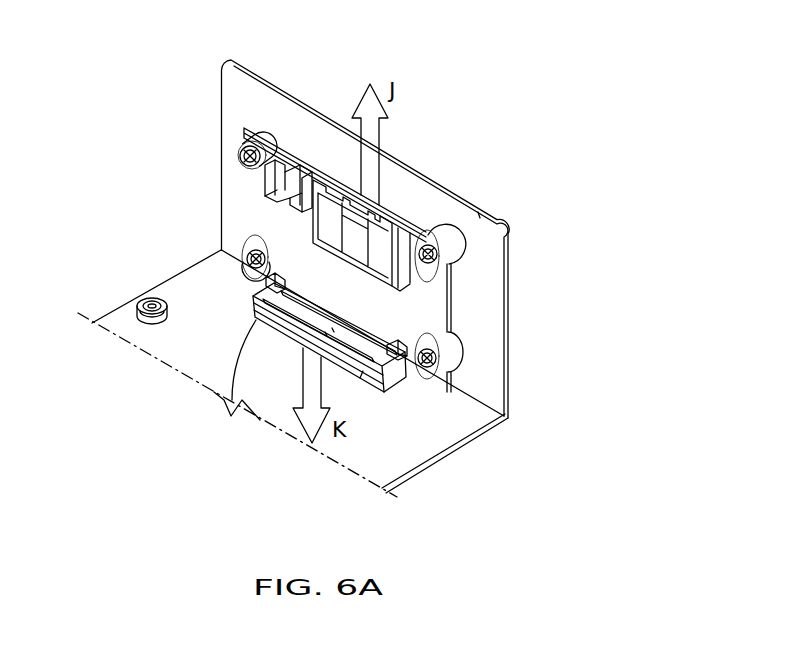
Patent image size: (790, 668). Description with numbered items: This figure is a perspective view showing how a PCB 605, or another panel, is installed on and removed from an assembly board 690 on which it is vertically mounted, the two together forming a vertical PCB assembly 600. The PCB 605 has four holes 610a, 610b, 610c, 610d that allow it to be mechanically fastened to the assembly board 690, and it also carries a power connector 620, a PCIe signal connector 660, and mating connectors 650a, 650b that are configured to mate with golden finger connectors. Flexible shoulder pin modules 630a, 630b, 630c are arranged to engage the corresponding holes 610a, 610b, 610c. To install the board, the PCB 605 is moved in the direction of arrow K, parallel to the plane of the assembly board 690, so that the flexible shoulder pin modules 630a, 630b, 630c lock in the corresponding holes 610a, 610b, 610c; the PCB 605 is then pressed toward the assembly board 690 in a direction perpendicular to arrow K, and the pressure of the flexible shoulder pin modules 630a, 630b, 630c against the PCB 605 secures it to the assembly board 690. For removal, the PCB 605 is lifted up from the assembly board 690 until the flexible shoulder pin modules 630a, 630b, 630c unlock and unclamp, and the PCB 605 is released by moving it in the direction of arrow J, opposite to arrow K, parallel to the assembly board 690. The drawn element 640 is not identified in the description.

The vertical PCB assembly 600 is at (542, 269).
The PCB 605 is at (328, 266).
The hole 610a is at (448, 292).
The hole 610b is at (448, 378).
The hole 610c is at (246, 284).
The hole 610d is at (241, 130).
The power connector 620 is at (290, 155).
The flexible shoulder pin module 630a is at (433, 224).
The flexible shoulder pin module 630b is at (437, 384).
The flexible shoulder pin module 630c is at (241, 258).
The washer 640 is at (240, 160).
The mating connector 650a is at (217, 392).
The mating connector 650b is at (363, 371).
The PCIe signal connector 660 is at (393, 204).
The assembly board 690 is at (478, 212).